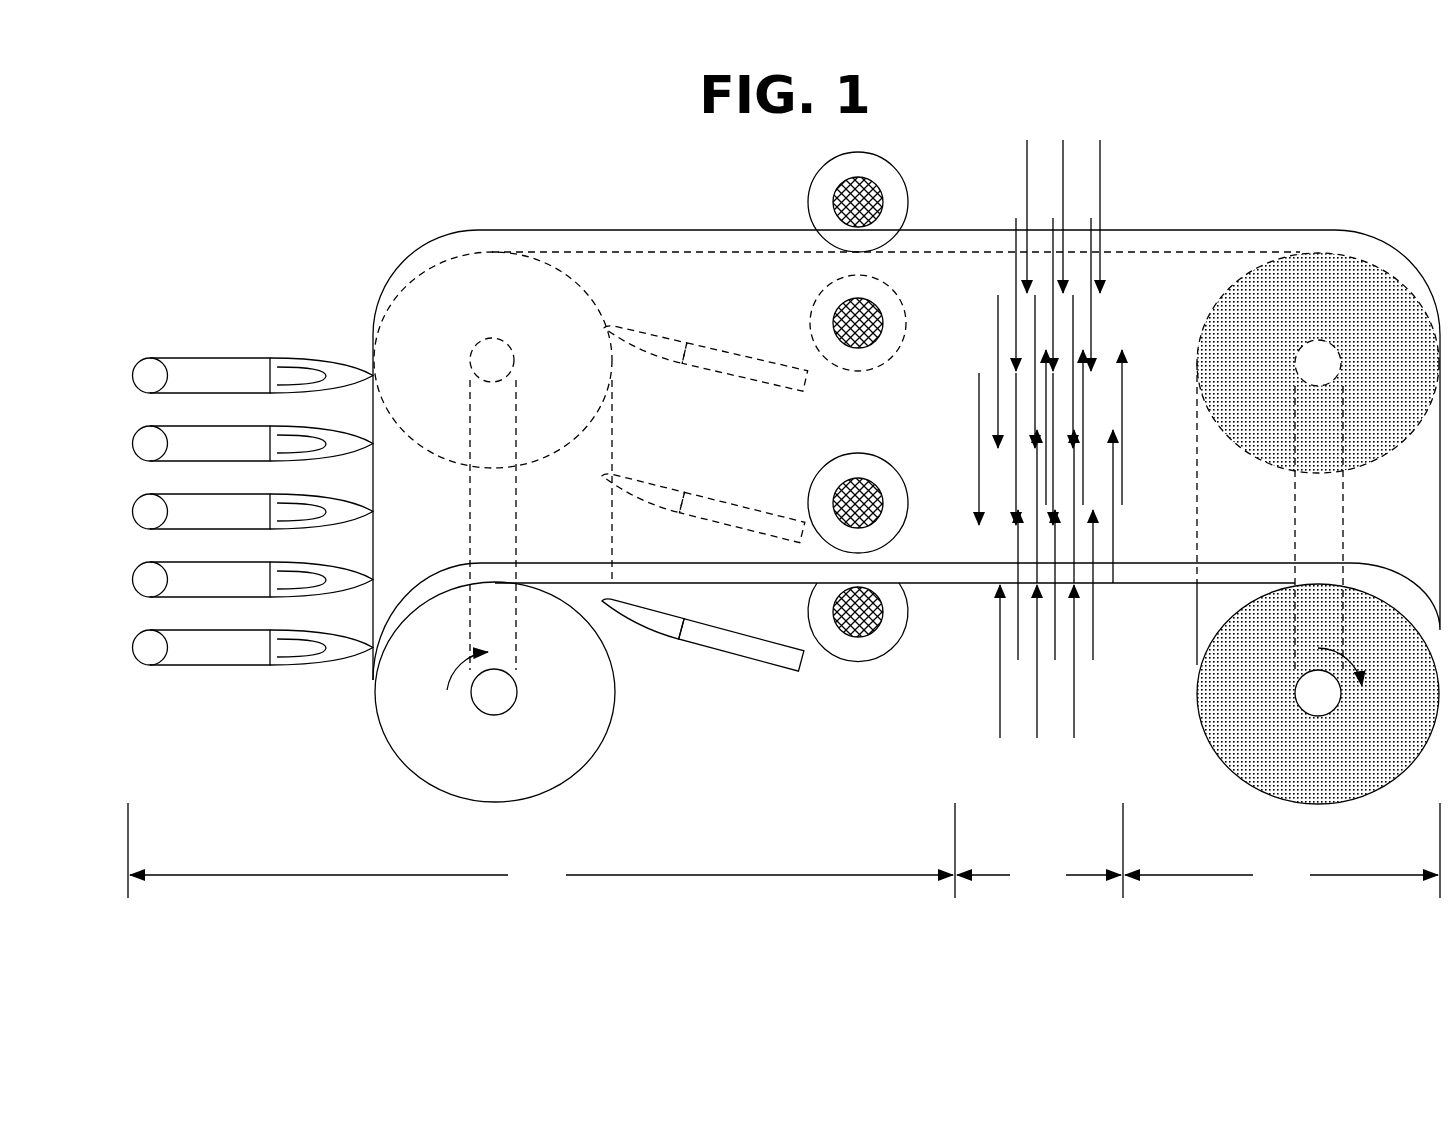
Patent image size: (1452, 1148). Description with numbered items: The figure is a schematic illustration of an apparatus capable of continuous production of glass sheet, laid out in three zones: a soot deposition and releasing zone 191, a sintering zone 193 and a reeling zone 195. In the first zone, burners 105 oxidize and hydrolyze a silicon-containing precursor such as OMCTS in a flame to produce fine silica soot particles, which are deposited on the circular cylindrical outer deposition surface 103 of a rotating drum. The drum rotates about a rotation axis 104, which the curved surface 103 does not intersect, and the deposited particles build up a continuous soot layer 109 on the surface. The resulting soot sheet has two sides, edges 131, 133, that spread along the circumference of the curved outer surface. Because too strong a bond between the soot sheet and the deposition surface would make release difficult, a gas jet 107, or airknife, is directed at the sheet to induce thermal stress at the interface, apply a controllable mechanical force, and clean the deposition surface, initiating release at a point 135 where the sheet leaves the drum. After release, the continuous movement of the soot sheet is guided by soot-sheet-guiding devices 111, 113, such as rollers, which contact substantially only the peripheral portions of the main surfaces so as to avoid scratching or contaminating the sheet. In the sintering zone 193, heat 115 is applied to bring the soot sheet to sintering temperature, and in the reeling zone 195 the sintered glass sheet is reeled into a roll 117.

The curved deposition surface 103 is at (415, 773).
The rotation axis 104 is at (505, 700).
The burners 105 is at (204, 355).
The gas jet 107 is at (731, 654).
The continuous soot layer 109 is at (603, 283).
The soot-sheet-guiding device 111 is at (845, 164).
The soot-sheet-guiding device 113 is at (849, 670).
The heat 115 is at (1132, 205).
The roll 117 is at (1325, 278).
The edge of the soot sheet 131 is at (733, 246).
The edge of the soot sheet 133 is at (900, 563).
The belt contact point 135 is at (372, 350).
The soot deposition and releasing zone 191 is at (541, 876).
The sintering zone 193 is at (1039, 876).
The reeling zone 195 is at (1281, 876).